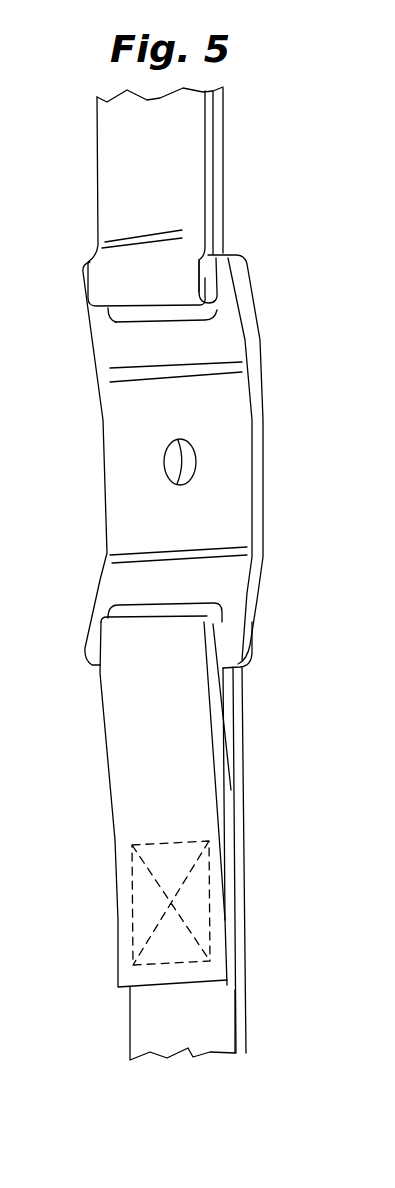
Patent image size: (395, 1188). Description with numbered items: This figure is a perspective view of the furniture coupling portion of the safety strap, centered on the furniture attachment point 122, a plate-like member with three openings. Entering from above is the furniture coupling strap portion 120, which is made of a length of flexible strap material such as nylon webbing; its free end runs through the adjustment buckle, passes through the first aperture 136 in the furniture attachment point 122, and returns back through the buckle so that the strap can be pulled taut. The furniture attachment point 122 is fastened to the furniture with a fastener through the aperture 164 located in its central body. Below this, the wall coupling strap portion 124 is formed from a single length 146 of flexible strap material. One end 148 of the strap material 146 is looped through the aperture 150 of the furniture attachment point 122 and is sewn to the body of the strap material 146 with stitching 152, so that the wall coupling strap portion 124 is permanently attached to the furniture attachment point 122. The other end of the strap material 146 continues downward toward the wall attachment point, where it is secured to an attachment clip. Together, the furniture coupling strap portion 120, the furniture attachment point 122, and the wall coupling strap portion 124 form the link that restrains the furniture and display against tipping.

The furniture coupling strap portion 120 is at (223, 168).
The furniture attachment point 122 is at (265, 447).
The wall coupling strap portion 124 is at (242, 1018).
The first aperture 136 is at (207, 298).
The length of flexible strap material 146 is at (247, 922).
The end of strap material 148 is at (123, 922).
The aperture 150 is at (217, 606).
The stitching 152 is at (210, 852).
The aperture 164 is at (178, 462).